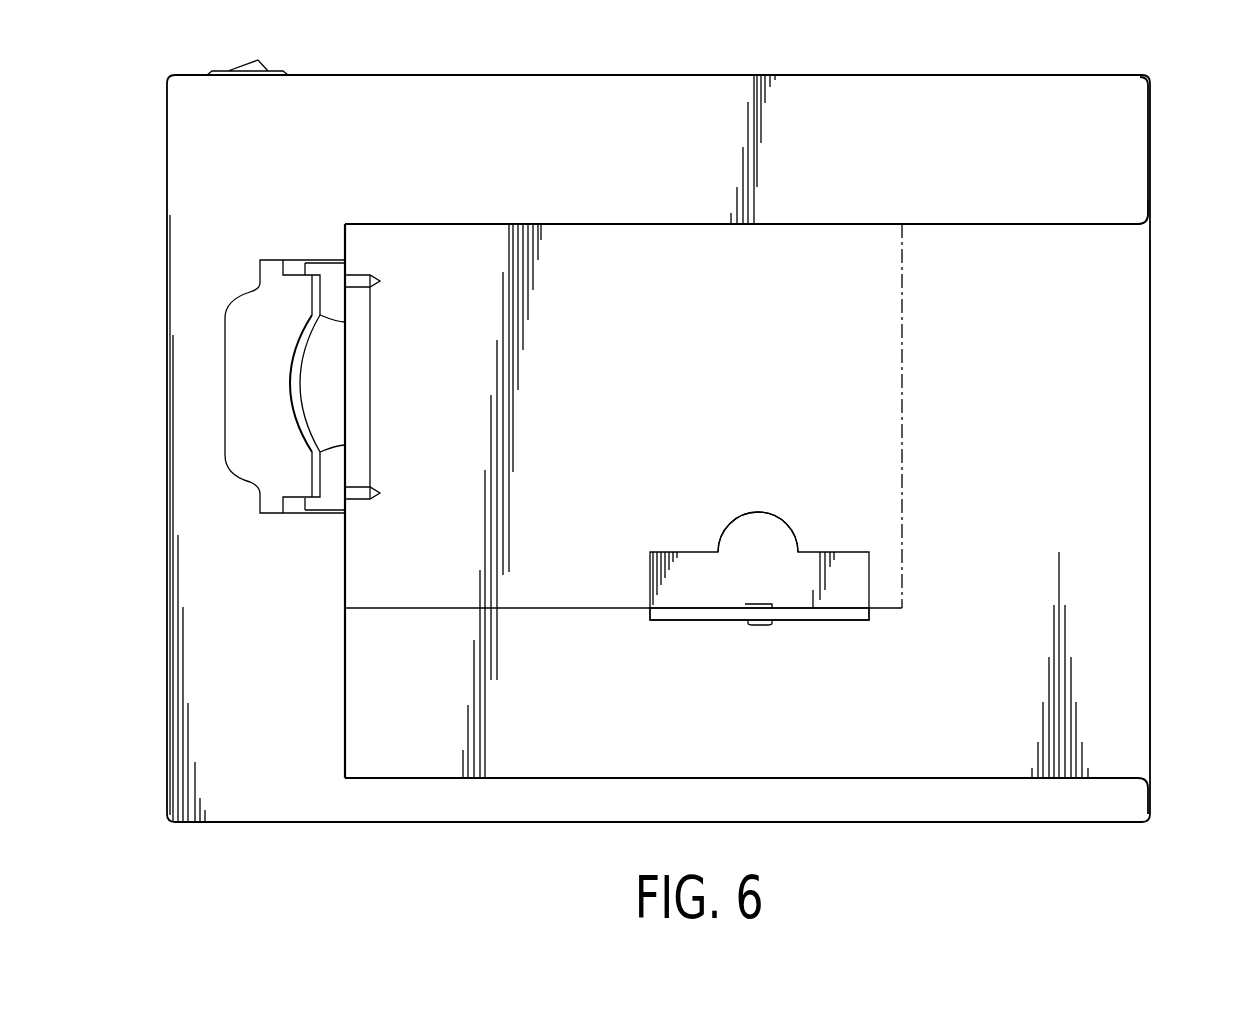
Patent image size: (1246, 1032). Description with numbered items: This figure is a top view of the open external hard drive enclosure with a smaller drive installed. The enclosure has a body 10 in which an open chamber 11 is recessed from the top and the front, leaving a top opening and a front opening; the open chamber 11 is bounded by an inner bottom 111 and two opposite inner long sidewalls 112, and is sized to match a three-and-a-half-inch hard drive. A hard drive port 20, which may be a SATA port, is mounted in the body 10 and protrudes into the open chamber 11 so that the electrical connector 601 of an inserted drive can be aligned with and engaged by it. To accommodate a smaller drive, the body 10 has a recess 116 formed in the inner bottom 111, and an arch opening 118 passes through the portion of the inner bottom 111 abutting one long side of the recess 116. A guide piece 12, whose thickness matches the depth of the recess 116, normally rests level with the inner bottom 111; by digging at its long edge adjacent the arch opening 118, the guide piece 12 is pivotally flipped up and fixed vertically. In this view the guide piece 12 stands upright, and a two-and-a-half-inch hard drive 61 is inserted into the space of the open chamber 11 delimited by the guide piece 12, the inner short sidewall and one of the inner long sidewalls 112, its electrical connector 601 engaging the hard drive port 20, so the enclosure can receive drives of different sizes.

The body 10 is at (1140, 105).
The open chamber 11 is at (1125, 232).
The inner long sidewall 112 is at (1085, 230).
The inner bottom 111 is at (1120, 486).
The 2.5" hard drive 61 is at (890, 470).
The recess 116 is at (858, 585).
The arch opening 118 is at (718, 478).
The guide piece 12 is at (650, 651).
The hard drive port 20 is at (373, 385).
The electrical connector 601 is at (373, 323).